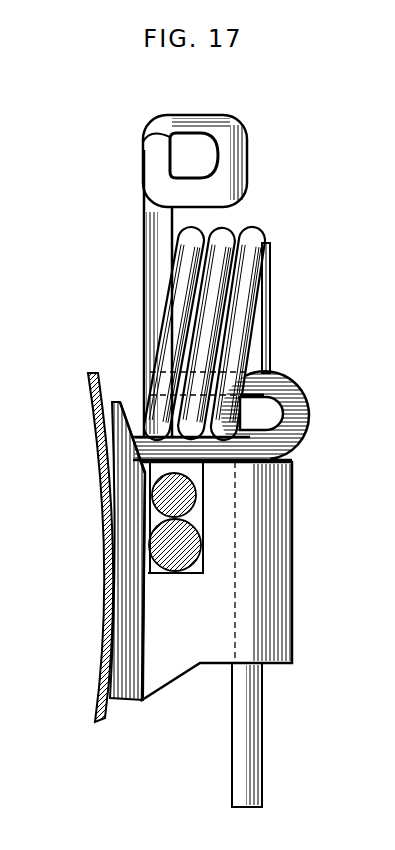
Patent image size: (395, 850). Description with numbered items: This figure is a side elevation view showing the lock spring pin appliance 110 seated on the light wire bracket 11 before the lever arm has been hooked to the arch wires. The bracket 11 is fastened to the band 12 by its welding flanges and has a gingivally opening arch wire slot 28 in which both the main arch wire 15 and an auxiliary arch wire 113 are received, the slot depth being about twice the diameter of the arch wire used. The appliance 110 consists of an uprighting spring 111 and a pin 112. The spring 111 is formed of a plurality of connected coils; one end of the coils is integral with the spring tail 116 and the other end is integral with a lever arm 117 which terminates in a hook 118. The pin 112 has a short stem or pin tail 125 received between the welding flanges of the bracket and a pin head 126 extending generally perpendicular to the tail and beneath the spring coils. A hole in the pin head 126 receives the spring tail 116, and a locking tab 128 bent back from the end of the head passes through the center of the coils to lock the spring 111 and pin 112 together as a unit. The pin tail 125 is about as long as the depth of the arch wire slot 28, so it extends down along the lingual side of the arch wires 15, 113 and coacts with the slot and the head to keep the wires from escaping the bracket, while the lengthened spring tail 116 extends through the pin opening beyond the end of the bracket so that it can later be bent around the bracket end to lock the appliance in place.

The light wire bracket 11 is at (232, 551).
The band 12 is at (113, 580).
The main arch wire 15 is at (165, 568).
The arch wire slot 28 is at (190, 563).
The lock spring pin appliance 110 is at (200, 288).
The uprighting spring 111 is at (273, 231).
The pin 112 is at (242, 402).
The auxiliary arch wire 113 is at (190, 497).
The spring tail 116 is at (257, 712).
The lever arm 117 is at (150, 206).
The hook 118 is at (236, 196).
The pin tail 125 is at (130, 498).
The pin head 126 is at (218, 443).
The locking tab 128 is at (253, 374).